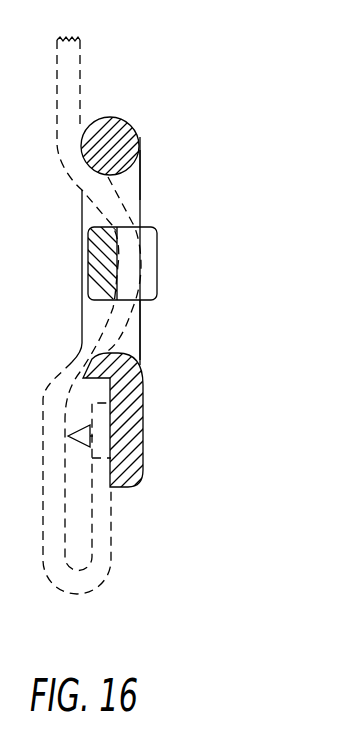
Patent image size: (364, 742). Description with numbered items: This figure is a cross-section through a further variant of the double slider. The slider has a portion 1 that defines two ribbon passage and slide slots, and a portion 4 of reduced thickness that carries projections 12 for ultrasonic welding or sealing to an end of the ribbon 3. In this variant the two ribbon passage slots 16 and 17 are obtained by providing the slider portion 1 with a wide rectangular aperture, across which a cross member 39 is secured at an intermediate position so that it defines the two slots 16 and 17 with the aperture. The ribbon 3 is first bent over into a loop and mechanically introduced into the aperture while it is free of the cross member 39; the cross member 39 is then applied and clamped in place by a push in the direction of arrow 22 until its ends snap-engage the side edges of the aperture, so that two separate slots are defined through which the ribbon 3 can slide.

The slider portion 1 is at (113, 133).
The ribbon 3 is at (59, 73).
The slider portion of reduced thickness 4 is at (143, 433).
The projections 12 is at (86, 447).
The ribbon passage slot 16 is at (134, 177).
The ribbon passage slot 17 is at (138, 333).
The arrow 22 is at (170, 268).
The cross member 39 is at (95, 257).